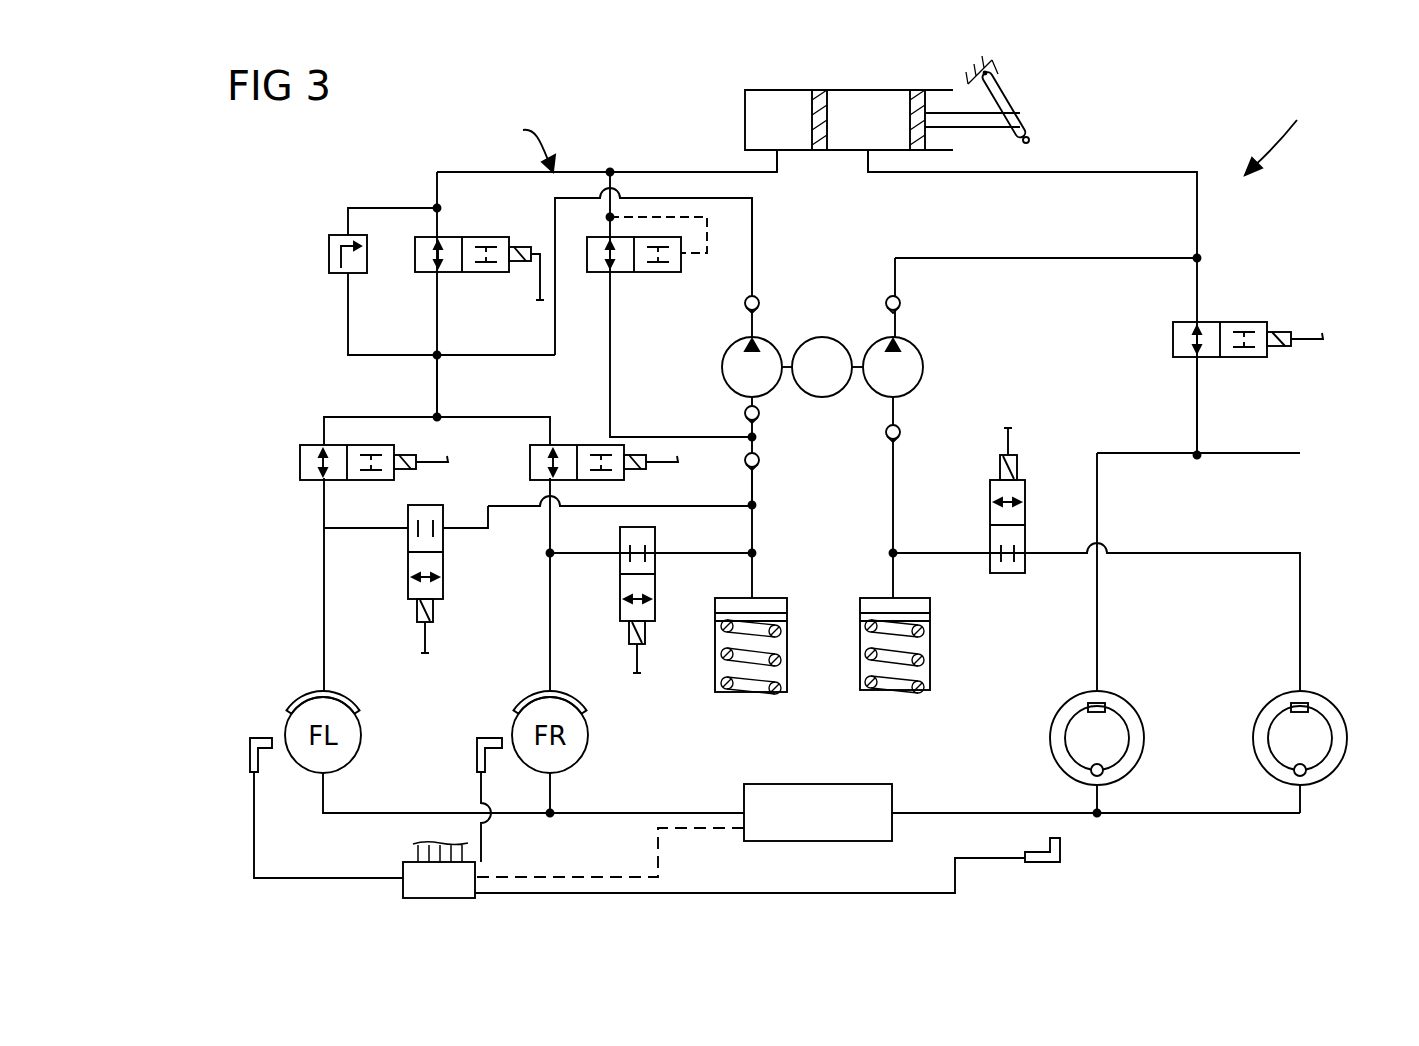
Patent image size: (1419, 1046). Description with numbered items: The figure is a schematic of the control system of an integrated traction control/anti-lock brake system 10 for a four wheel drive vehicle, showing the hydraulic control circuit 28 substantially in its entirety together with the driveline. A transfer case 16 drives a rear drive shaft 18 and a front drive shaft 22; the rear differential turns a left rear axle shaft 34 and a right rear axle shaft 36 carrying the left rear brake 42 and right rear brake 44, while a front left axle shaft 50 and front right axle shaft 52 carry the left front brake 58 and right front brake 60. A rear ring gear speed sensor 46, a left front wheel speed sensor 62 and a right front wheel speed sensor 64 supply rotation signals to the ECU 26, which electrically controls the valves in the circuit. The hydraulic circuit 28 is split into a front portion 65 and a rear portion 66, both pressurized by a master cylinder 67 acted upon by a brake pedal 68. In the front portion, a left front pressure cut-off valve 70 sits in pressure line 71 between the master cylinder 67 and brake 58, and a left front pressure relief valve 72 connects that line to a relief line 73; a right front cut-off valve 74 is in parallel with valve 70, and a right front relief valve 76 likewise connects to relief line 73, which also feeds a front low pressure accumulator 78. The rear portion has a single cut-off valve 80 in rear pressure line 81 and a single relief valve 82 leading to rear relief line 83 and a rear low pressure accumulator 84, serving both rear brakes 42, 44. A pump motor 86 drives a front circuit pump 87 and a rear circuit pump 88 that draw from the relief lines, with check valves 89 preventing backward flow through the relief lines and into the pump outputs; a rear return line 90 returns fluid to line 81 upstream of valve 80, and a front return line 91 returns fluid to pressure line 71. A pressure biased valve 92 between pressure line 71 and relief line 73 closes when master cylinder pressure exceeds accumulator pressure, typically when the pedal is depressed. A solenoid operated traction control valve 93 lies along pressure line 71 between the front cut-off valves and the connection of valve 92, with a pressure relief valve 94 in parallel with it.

The traction control system 10 is at (1284, 140).
The transfer case 16 is at (818, 783).
The rear drive shaft 18 is at (975, 812).
The front drive shaft 22 is at (700, 812).
The ECU 26 is at (402, 893).
The hydraulic control circuit 28 is at (522, 139).
The left rear axle shaft 34 is at (1099, 800).
The right rear axle shaft 36 is at (1302, 797).
The left rear brake 42 is at (1131, 694).
The right rear brake 44 is at (1338, 709).
The rear ring gear speed sensor 46 is at (1061, 846).
The front left axle shaft 50 is at (340, 815).
The front right axle shaft 52 is at (556, 776).
The left front brake 58 is at (357, 702).
The right front brake 60 is at (584, 702).
The left front wheel speed sensor 62 is at (249, 755).
The right front wheel speed sensor 64 is at (476, 745).
The front portion 65 is at (778, 175).
The rear portion 66 is at (950, 174).
The master cylinder 67 is at (745, 120).
The brake pedal 68 is at (1035, 128).
The left front pressure cut-off valve 70 is at (300, 444).
The pressure line 71 is at (435, 392).
The left front pressure relief solenoid operated valve 72 is at (444, 578).
The relief line 73 is at (754, 487).
The right front solenoid operated pressure cut off valve 74 is at (577, 444).
The right front solenoid operated pressure relief valve 76 is at (656, 540).
The front low pressure accumulator 78 is at (771, 597).
The rear axle solenoid operated pressure cut-off valve 80 is at (1240, 321).
The rear pressure line 81 is at (1199, 400).
The rear axle solenoid operated pressure relief valve 82 is at (1026, 490).
The rear relief line 83 is at (940, 551).
The rear low pressure accumulator 84 is at (931, 627).
The motor 86 is at (822, 336).
The front circuit pump 87 is at (722, 369).
The rear circuit pump 88 is at (923, 367).
The check valves 89 is at (888, 300).
The rear return line 90 is at (1040, 257).
The front return line 91 is at (754, 245).
The pressure biased valve 92 is at (655, 273).
The solenoid operated traction control valve 93 is at (470, 273).
The pressure relief valve 94 is at (328, 255).